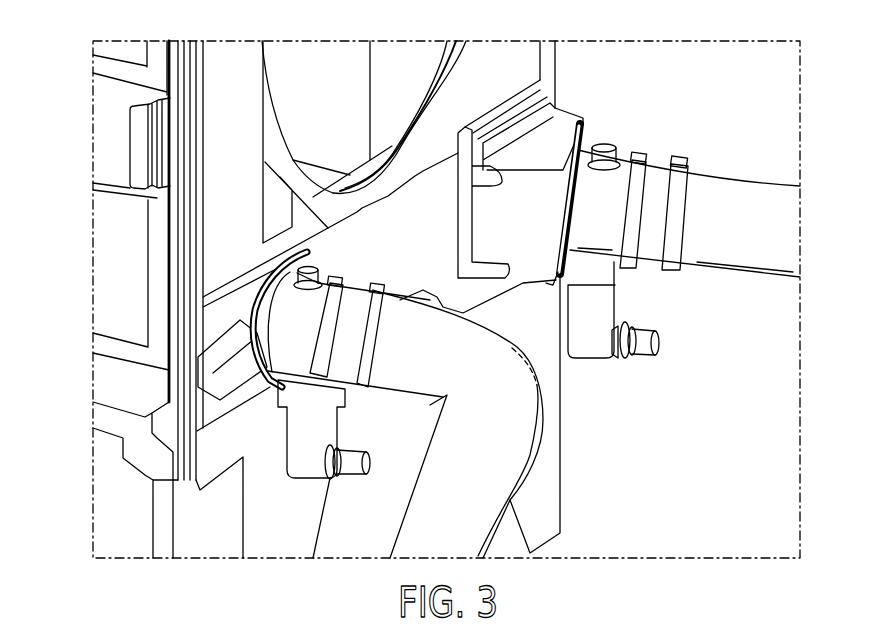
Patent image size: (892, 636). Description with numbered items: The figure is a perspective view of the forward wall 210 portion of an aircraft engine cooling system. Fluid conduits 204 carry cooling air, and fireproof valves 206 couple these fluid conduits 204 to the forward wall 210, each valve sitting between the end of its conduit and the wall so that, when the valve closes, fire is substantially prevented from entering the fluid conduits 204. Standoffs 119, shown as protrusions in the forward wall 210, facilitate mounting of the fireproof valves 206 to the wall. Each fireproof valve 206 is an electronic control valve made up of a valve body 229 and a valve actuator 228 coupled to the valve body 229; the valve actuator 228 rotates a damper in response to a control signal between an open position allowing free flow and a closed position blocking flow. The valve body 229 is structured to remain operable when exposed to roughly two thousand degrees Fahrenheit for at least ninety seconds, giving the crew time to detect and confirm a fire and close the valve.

The standoffs 119 is at (603, 133).
The fluid conduits 204 is at (753, 250).
The fireproof valves 206 is at (641, 147).
The forward wall 210 is at (228, 204).
The valve actuator 228 is at (585, 335).
The valve body 229 is at (597, 238).